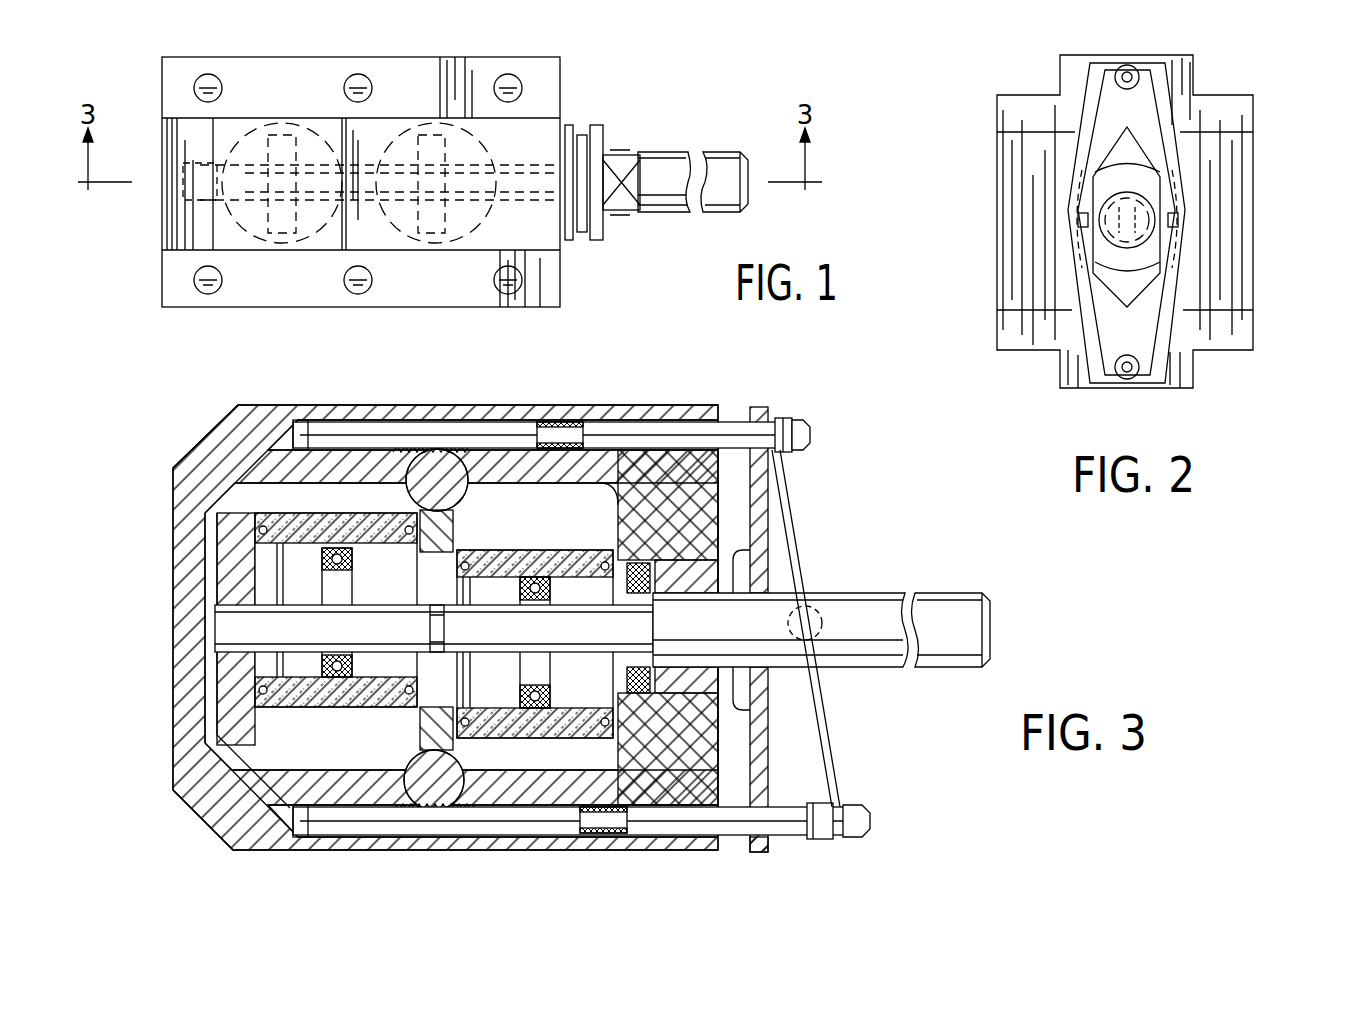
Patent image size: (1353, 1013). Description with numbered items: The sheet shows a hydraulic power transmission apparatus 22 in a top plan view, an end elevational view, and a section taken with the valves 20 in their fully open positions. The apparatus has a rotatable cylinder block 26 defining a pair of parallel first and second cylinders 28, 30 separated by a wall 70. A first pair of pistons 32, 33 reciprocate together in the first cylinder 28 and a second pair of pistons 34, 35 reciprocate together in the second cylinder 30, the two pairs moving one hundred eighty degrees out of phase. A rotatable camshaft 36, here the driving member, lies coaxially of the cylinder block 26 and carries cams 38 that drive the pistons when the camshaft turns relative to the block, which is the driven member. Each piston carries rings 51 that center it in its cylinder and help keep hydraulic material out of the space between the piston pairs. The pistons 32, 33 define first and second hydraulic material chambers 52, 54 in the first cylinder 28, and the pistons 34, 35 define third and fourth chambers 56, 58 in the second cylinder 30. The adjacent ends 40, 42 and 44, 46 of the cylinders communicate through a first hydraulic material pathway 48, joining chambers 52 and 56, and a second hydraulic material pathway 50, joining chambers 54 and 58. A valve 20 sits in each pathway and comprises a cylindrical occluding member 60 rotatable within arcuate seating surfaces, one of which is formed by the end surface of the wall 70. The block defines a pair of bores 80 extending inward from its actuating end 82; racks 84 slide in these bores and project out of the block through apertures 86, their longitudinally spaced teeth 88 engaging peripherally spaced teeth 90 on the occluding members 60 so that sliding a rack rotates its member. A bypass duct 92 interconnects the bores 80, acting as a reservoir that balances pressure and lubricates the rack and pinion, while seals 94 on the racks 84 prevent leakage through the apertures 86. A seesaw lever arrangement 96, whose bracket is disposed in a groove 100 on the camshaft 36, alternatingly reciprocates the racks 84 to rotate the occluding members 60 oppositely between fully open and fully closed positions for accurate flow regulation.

In FIG. 3, the valve 20 is at (470, 494).
In FIG. 3, the power transmission apparatus 22 is at (181, 435).
In FIG. 1, the rotatable cylinder block 26 is at (423, 283).
In FIG. 2, the rotatable cylinder block 26 is at (1237, 118).
In FIG. 3, the rotatable cylinder block 26 is at (308, 843).
In FIG. 1, the first cylinder 28 is at (303, 130).
In FIG. 3, the first cylinder 28 is at (175, 792).
In FIG. 1, the second cylinder 30 is at (414, 127).
In FIG. 3, the second cylinder 30 is at (683, 522).
In FIG. 3, the piston 32 is at (248, 508).
In FIG. 3, the piston 33 is at (220, 712).
In FIG. 3, the piston 34 is at (720, 520).
In FIG. 3, the piston 35 is at (537, 737).
In FIG. 1, the rotatable camshaft 36 is at (667, 200).
In FIG. 2, the rotatable camshaft 36 is at (1133, 212).
In FIG. 3, the rotatable camshaft 36 is at (877, 603).
In FIG. 1, the cams 38 is at (273, 228).
In FIG. 3, the cams 38 is at (330, 590).
In FIG. 3, the end of cylinder 40 is at (222, 442).
In FIG. 3, the end of cylinder 42 is at (578, 525).
In FIG. 3, the end of cylinder 44 is at (233, 848).
In FIG. 3, the end of cylinder 46 is at (520, 765).
In FIG. 1, the first hydraulic material pathway 48 is at (345, 190).
In FIG. 3, the first hydraulic material pathway 48 is at (383, 475).
In FIG. 1, the second hydraulic material pathway 50 is at (373, 195).
In FIG. 3, the second hydraulic material pathway 50 is at (478, 810).
In FIG. 3, the rings 51 is at (257, 530).
In FIG. 3, the first hydraulic material chamber 52 is at (357, 503).
In FIG. 3, the second hydraulic material chamber 54 is at (217, 818).
In FIG. 3, the third hydraulic material chamber 56 is at (632, 480).
In FIG. 3, the fourth hydraulic material chamber 58 is at (595, 756).
In FIG. 3, the occluding member 60 is at (470, 455).
In FIG. 3, the wall 70 is at (452, 532).
In FIG. 3, the bores 80 is at (293, 422).
In FIG. 3, the actuating end 82 is at (718, 412).
In FIG. 1, the racks 84 is at (455, 130).
In FIG. 2, the racks 84 is at (1130, 66).
In FIG. 3, the racks 84 is at (460, 428).
In FIG. 1, the apertures 86 is at (575, 217).
In FIG. 3, the apertures 86 is at (775, 428).
In FIG. 3, the teeth of racks 88 is at (417, 458).
In FIG. 3, the teeth of occluding member 90 is at (397, 448).
In FIG. 3, the bypass duct 92 is at (210, 568).
In FIG. 3, the seals 94 is at (557, 418).
In FIG. 3, the seesaw lever arrangement 96 is at (805, 566).
In FIG. 3, the groove 100 is at (802, 690).